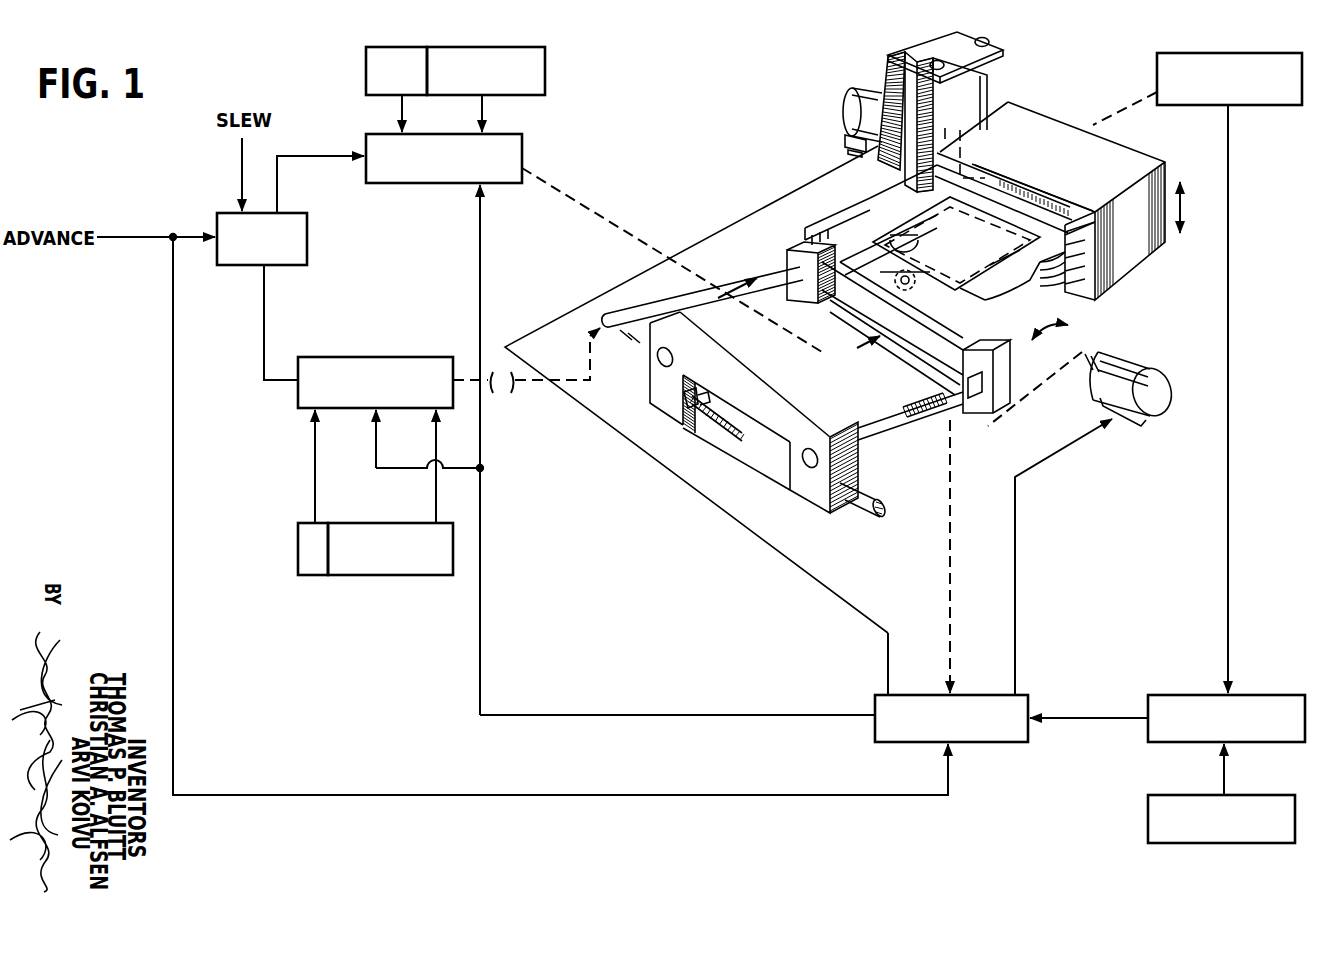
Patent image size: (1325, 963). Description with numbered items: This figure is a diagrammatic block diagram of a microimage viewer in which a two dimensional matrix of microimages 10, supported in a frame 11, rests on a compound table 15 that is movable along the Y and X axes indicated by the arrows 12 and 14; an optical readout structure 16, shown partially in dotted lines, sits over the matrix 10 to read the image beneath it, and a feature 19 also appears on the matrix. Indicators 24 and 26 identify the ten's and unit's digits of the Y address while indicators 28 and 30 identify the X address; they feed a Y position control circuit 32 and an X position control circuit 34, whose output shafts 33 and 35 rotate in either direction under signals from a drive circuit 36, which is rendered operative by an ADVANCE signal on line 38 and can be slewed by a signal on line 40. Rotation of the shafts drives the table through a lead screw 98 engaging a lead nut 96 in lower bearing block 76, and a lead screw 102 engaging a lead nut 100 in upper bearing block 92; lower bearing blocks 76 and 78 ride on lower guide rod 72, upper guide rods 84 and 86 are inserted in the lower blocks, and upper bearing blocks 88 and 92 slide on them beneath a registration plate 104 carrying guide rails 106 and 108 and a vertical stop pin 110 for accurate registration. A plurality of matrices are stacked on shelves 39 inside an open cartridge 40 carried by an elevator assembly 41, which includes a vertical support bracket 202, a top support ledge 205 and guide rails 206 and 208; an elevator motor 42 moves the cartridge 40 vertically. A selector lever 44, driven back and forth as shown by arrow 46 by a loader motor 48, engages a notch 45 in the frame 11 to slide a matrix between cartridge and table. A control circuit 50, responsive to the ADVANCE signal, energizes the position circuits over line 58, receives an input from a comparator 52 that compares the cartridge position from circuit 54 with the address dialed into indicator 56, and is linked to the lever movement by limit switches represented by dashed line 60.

The matrix of microimages 10 is at (965, 254).
The frame 11 is at (1040, 280).
The Y axis arrow 12 is at (866, 337).
The X axis arrow 14 is at (740, 287).
The compound table 15 is at (811, 224).
The optical readout structure 16 is at (872, 202).
The hole in matrix 19 is at (900, 262).
The Y address indicator 24 is at (365, 74).
The Y address indicator 26 is at (547, 72).
The X address indicator 28 is at (298, 575).
The X address indicator 30 is at (386, 575).
The Y position control circuit 32 is at (523, 134).
The Y position output shaft 33 is at (577, 200).
The X position control circuit 34 is at (362, 357).
The X position output shaft 35 is at (517, 383).
The drive circuit 36 is at (308, 240).
The ADVANCE signal line 38 is at (145, 239).
The shelves 39 is at (1080, 240).
The cartridge 40 is at (240, 175).
The elevator assembly 41 is at (944, 112).
The elevator motor 42 is at (848, 117).
The selector lever 44 is at (975, 285).
The notch 45 is at (1068, 225).
The arrow 46 is at (1070, 327).
The loader motor 48 is at (1128, 372).
The control circuit 50 is at (1008, 742).
The comparator 52 is at (1190, 695).
The cartridge position circuit 54 is at (1262, 105).
The matrix indicator 56 is at (1148, 820).
The line 58 is at (635, 715).
The dashed line 60 is at (955, 560).
The lower horizontal guide rod 72 is at (872, 510).
The lower bearing block 76 is at (666, 388).
The lower bearing block 78 is at (800, 485).
The upper guide rod 84 is at (720, 311).
The upper guide rod 86 is at (880, 440).
The upper bearing block 88 is at (788, 257).
The upper bearing block 92 is at (985, 398).
The lead nut 96 is at (694, 408).
The lead screw 98 is at (738, 440).
The lead nut 100 is at (976, 386).
The lead screw 102 is at (940, 420).
The registration plate 104 is at (850, 150).
The guide rail 106 is at (760, 215).
The guide rail 108 is at (918, 372).
The vertical stop pin 110 is at (870, 302).
The vertical support bracket 202 is at (890, 86).
The top support ledge 205 is at (912, 56).
The guide rail 206 is at (990, 96).
The guide rail 208 is at (942, 112).